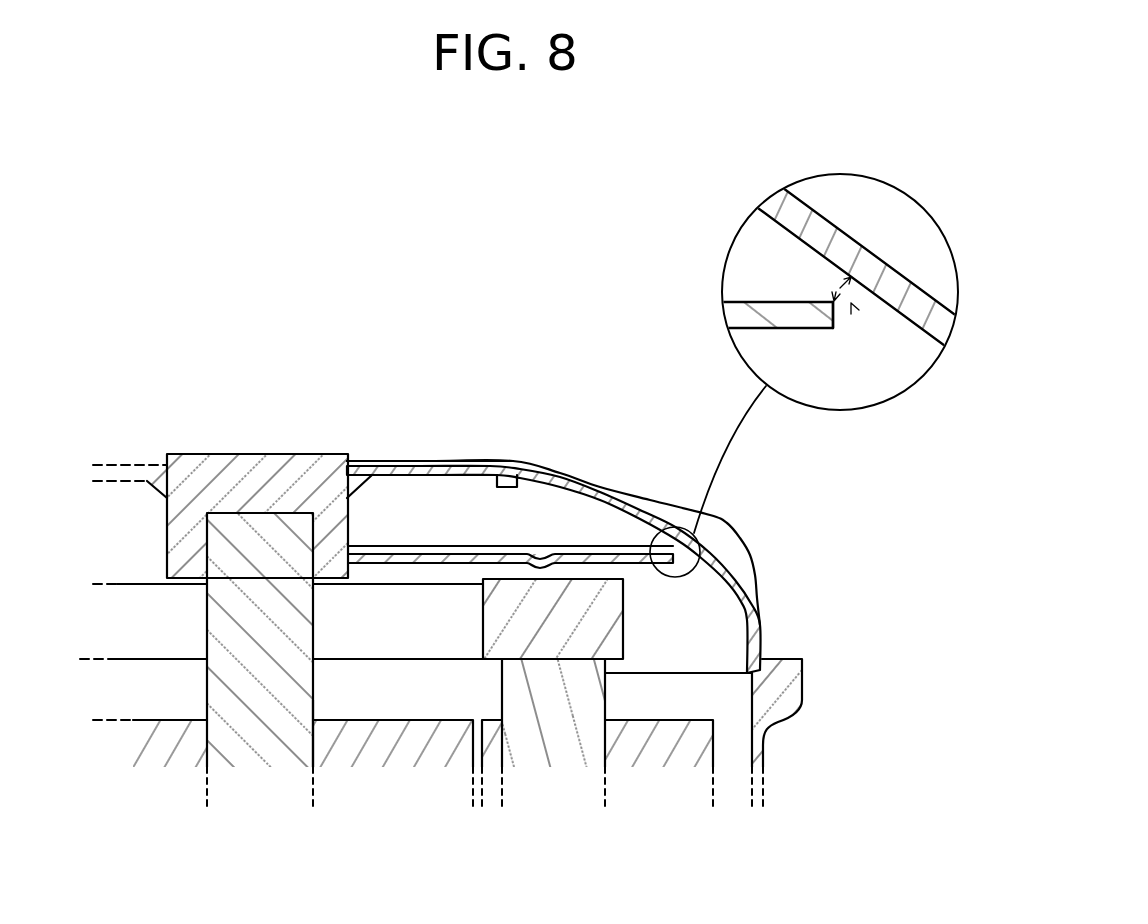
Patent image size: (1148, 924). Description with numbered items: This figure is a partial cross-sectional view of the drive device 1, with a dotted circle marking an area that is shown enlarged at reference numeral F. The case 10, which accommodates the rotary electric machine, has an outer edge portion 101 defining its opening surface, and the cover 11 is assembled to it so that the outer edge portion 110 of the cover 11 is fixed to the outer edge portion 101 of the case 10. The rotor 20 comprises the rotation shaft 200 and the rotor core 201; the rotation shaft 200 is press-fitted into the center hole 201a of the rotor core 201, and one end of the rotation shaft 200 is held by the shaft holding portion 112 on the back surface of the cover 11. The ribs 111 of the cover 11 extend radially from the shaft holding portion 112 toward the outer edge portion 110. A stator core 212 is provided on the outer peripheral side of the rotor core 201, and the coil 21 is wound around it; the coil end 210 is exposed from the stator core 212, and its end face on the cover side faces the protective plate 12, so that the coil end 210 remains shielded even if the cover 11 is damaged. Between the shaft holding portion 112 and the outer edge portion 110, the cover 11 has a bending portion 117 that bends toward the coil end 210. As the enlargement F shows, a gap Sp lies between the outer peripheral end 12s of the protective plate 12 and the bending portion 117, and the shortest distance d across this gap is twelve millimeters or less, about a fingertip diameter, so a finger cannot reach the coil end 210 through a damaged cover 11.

The drive device 1 is at (620, 395).
The case 10 is at (822, 692).
The cover 11 is at (773, 573).
The protective plate 12 is at (570, 550).
The outer peripheral end 12s is at (833, 331).
The rotor 20 is at (183, 640).
The coil 21 is at (628, 630).
The outer edge portion 101 is at (790, 700).
The outer edge portion 110 is at (802, 660).
The ribs 111 is at (613, 484).
The shaft holding portion 112 is at (365, 461).
The bending portion 117 is at (656, 516).
The rotation shaft 200 is at (262, 535).
The rotor core 201 is at (408, 730).
The center hole 201a is at (313, 735).
The coil end 210 is at (497, 598).
The stator core 212 is at (672, 735).
The shortest distance d is at (837, 283).
The gap Sp is at (851, 303).
The enlarged area F is at (900, 187).